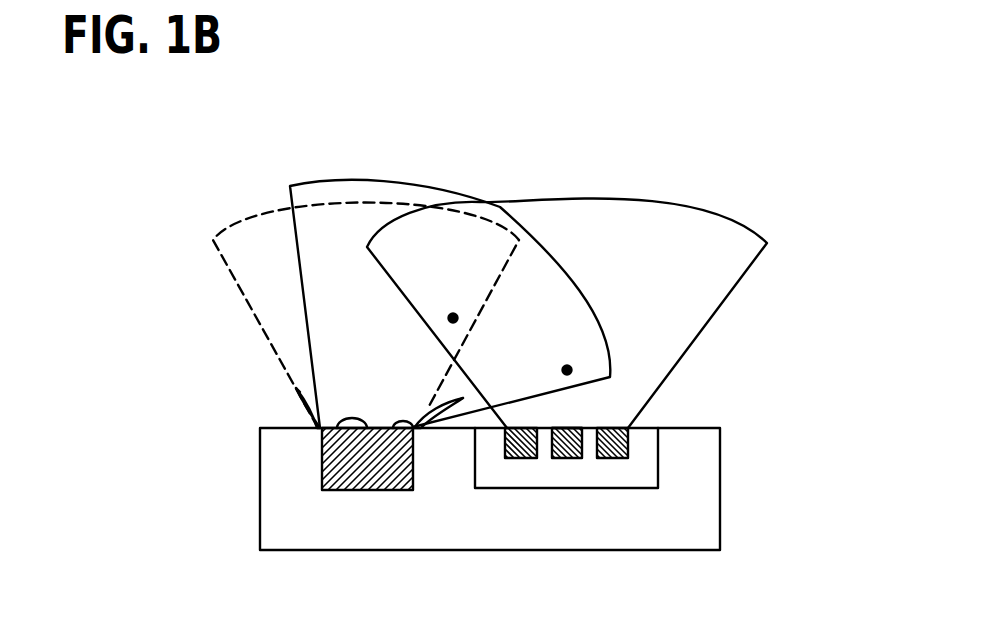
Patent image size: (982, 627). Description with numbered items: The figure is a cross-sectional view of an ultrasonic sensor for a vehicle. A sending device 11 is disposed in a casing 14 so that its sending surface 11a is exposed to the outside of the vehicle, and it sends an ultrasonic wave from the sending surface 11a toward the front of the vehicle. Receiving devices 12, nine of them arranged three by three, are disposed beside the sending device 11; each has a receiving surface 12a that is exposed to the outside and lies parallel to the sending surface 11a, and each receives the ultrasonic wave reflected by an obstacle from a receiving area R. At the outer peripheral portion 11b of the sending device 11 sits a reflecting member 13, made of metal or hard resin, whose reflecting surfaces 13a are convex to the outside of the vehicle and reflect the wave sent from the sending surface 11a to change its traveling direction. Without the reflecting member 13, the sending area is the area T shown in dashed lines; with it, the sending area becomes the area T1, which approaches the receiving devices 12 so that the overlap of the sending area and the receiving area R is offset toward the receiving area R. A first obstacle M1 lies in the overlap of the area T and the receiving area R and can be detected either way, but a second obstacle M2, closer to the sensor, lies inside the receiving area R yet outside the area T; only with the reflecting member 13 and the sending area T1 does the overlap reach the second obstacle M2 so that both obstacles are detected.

The sending device 11 is at (385, 475).
The sending surface 11a is at (322, 438).
The outer peripheral portion 11b is at (383, 437).
The receiving devices 12 is at (565, 458).
The receiving surface 12a is at (567, 428).
The reflecting member 13 is at (308, 420).
The reflecting surfaces 13a is at (432, 402).
The casing 14 is at (720, 487).
The sending area T is at (262, 212).
The sending area T1 is at (395, 183).
The receiving area R is at (680, 203).
The first obstacle M1 is at (455, 312).
The second obstacle M2 is at (566, 365).